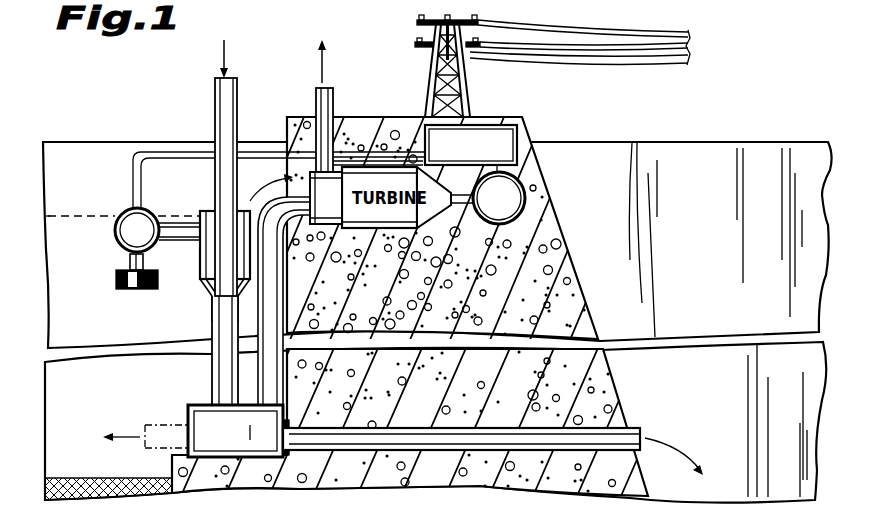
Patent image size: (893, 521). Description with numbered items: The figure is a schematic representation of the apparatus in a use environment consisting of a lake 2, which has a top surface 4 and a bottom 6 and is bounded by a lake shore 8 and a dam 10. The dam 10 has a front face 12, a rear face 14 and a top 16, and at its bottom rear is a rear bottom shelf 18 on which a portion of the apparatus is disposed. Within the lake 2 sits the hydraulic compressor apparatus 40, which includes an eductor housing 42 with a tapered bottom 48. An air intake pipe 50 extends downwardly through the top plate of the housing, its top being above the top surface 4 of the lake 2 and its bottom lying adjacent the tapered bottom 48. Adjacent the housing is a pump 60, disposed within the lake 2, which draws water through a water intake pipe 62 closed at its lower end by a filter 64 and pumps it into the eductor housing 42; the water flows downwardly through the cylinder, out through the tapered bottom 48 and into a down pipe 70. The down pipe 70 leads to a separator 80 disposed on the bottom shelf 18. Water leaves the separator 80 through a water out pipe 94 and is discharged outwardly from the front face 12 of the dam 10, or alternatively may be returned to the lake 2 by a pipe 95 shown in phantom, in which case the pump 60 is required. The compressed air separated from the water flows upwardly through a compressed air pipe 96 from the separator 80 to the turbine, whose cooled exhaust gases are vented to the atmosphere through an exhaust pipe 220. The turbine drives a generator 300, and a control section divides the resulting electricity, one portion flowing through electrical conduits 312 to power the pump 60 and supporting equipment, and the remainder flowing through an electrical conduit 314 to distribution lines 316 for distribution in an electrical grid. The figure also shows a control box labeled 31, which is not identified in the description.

The lake 2 is at (80, 230).
The top surface 4 is at (71, 217).
The bottom 6 is at (97, 478).
The lake shore 8 is at (108, 141).
The dam 10 is at (605, 326).
The front face 12 is at (607, 383).
The rear face 14 is at (287, 306).
The top 16 is at (491, 113).
The rear bottom shelf 18 is at (172, 456).
The control unit 31 is at (523, 126).
The electrical conduits 312 is at (143, 192).
The hydraulic compressor apparatus 40 is at (255, 78).
The eductor housing 42 is at (200, 262).
The tapered bottom 48 is at (212, 302).
The air intake pipe 50 is at (214, 82).
The pump 60 is at (158, 215).
The water intake pipe 62 is at (128, 259).
The filter 64 is at (116, 288).
The down pipe 70 is at (211, 322).
The separator 80 is at (202, 398).
The water out pipe 94 is at (643, 430).
The pipe 95 is at (156, 423).
The compressed air pipe 96 is at (284, 373).
The exhaust pipe 220 is at (315, 92).
The generator 300 is at (538, 185).
The electrical conduit 314 is at (467, 70).
The distribution lines 316 is at (420, 31).